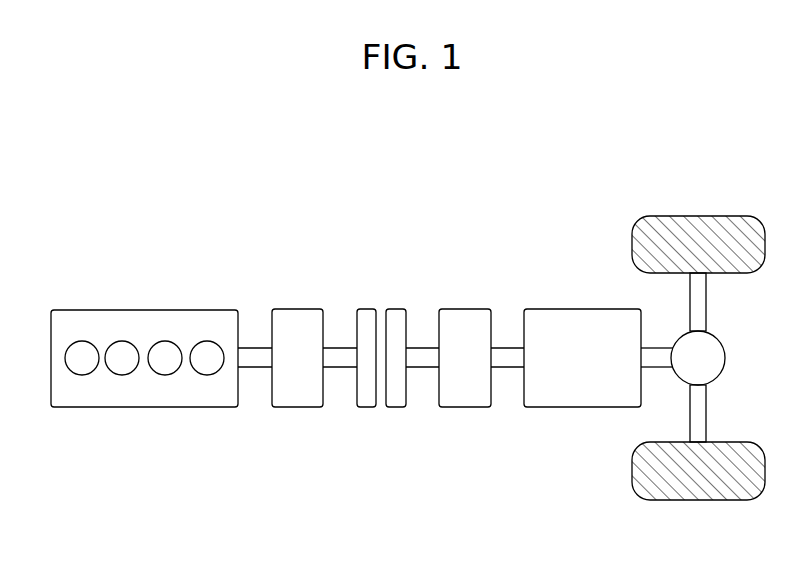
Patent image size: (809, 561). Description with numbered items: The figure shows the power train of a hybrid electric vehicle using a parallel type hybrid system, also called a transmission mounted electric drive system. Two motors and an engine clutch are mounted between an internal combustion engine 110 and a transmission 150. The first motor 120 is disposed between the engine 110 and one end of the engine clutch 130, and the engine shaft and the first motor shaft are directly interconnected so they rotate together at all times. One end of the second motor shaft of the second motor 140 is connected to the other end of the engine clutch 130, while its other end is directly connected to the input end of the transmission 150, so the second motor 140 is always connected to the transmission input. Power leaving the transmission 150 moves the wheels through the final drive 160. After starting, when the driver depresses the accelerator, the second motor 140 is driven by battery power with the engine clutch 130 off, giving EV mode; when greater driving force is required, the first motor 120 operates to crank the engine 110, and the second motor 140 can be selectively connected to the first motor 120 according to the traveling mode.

The internal combustion engine 110 is at (143, 309).
The first motor 120 is at (297, 309).
The engine clutch 130 is at (395, 309).
The second motor 140 is at (465, 309).
The transmission 150 is at (570, 309).
The final drive 160 is at (725, 358).